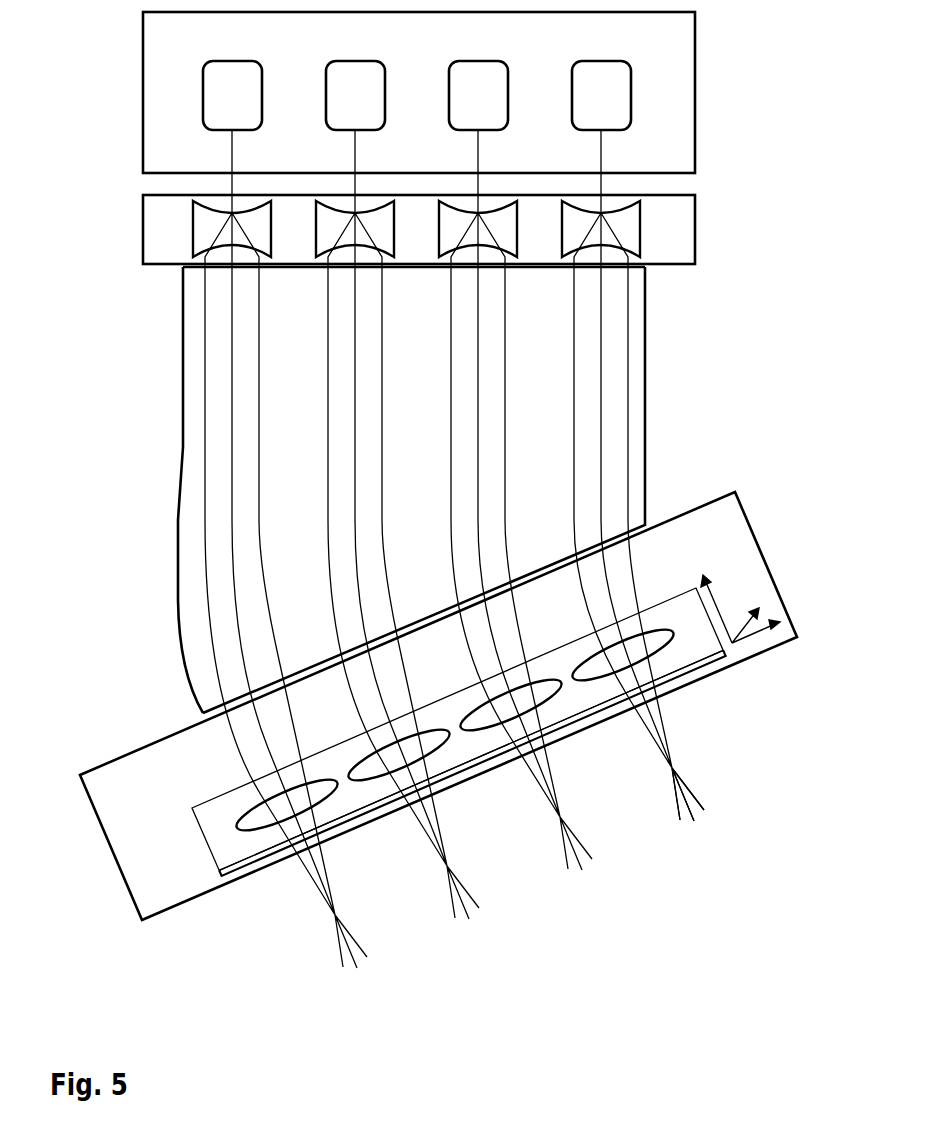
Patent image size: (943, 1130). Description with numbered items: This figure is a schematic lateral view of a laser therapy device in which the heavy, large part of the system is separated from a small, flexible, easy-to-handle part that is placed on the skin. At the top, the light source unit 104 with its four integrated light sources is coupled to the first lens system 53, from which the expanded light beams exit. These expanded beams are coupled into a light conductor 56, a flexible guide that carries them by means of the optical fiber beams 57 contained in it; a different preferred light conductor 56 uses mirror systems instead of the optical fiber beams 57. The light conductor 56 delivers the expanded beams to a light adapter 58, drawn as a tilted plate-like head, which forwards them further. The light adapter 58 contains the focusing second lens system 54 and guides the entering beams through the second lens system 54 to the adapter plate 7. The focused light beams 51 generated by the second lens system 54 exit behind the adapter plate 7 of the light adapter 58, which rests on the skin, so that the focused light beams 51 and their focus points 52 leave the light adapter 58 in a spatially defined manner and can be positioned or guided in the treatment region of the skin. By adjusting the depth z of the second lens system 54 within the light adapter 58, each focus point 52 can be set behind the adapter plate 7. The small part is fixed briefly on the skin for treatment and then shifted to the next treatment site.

The light source unit 104 is at (690, 118).
The first lens system 53 is at (690, 240).
The light conductor 56 is at (645, 343).
The optical fiber beams 57 is at (243, 483).
The light adapter 58 is at (690, 538).
The second lens system 54 is at (695, 623).
The focused light beams 51 is at (655, 717).
The focus points 52 is at (678, 768).
The adapter plate 7 is at (255, 863).